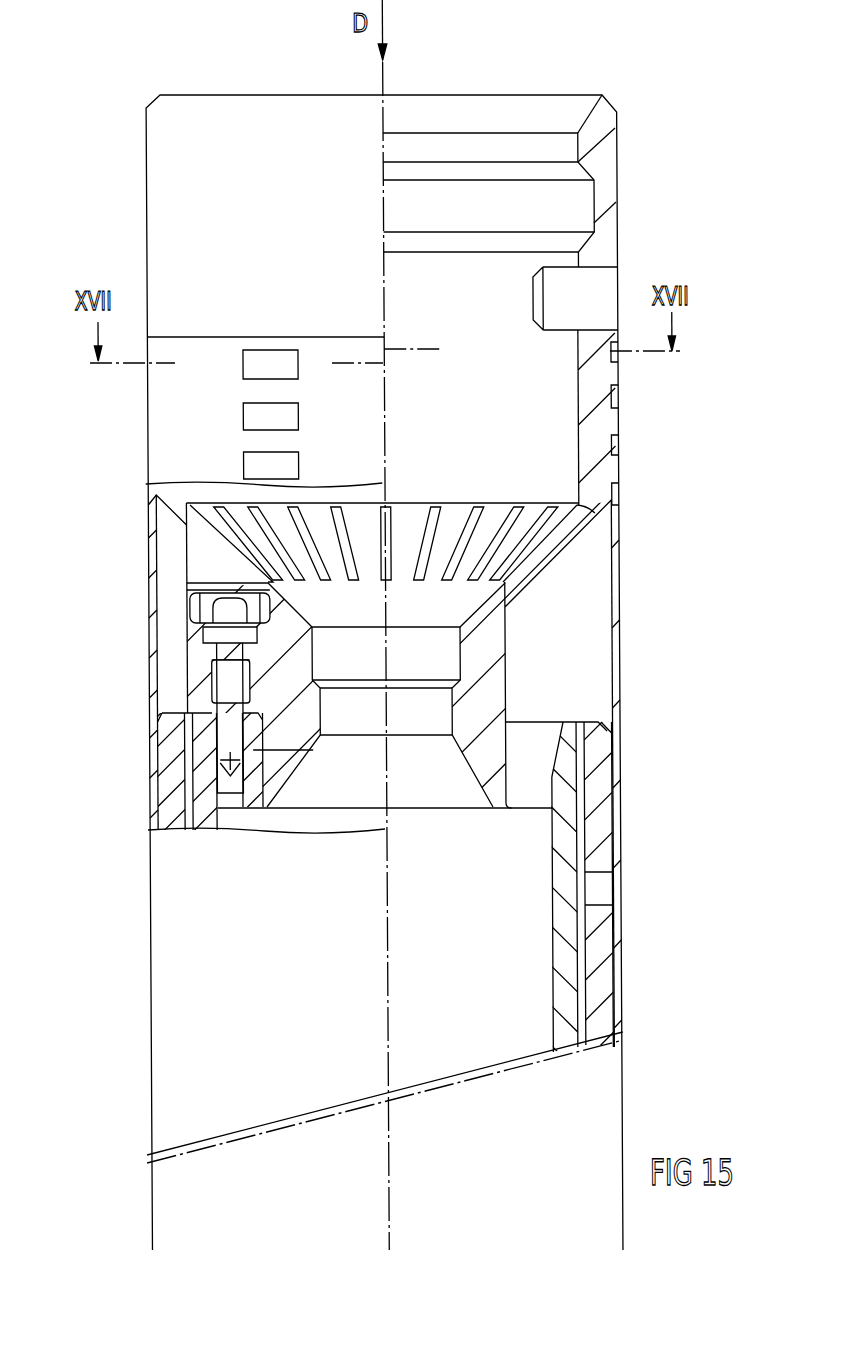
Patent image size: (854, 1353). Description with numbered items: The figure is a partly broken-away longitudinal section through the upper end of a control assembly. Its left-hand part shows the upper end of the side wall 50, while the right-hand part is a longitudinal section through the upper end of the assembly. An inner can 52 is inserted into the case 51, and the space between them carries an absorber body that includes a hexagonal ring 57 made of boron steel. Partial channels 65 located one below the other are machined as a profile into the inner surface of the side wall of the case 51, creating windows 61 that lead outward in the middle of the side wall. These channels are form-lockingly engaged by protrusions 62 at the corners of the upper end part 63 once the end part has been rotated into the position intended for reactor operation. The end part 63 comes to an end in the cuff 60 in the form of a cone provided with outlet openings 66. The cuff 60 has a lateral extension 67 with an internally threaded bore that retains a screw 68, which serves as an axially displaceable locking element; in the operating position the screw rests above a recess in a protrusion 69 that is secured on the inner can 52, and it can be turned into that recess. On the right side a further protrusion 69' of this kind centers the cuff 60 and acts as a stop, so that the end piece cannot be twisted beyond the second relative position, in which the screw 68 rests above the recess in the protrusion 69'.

The side wall 50 is at (162, 1098).
The case 51 is at (152, 613).
The inner can 52 is at (200, 823).
The hexagonal ring 57 is at (168, 817).
The cuff 60 is at (486, 665).
The windows 61 is at (296, 365).
The protrusions 62 is at (615, 370).
The upper end part 63 is at (583, 390).
The partial channels 65 is at (615, 398).
The outlet openings 66 is at (474, 478).
The lateral extension 67 is at (271, 782).
The screw 68 is at (233, 793).
The protrusion 69 is at (297, 768).
The protrusion 69' is at (511, 831).